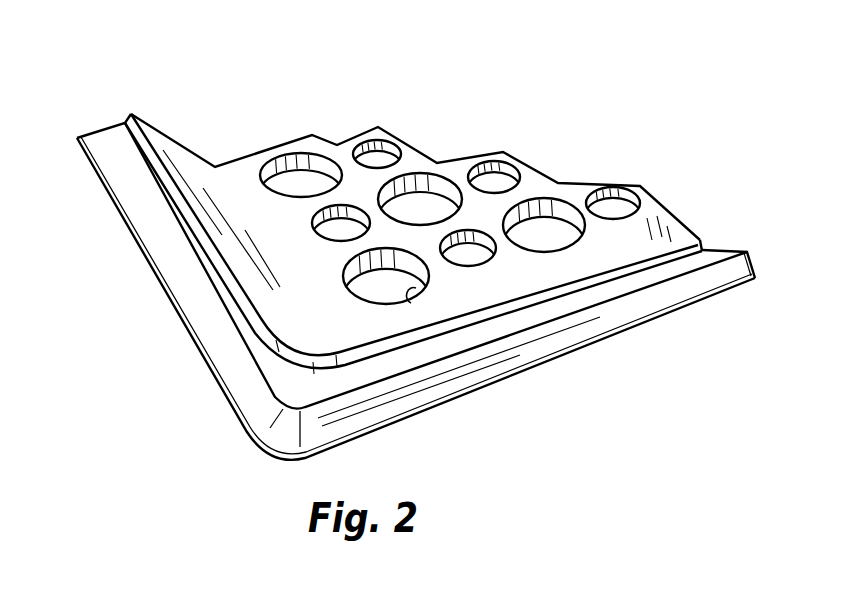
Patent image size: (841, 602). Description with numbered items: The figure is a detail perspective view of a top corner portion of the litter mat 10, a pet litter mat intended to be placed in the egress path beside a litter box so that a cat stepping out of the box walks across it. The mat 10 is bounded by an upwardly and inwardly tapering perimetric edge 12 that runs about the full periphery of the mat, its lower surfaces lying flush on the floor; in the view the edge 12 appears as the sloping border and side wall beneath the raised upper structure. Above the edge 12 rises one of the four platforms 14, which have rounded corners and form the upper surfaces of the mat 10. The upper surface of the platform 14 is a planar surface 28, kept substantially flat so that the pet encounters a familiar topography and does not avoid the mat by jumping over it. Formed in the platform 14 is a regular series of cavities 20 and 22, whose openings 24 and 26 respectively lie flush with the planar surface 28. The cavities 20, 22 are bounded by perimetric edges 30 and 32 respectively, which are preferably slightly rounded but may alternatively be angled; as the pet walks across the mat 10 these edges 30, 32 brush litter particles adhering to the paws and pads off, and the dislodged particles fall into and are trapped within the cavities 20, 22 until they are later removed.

The litter mat 10 is at (618, 98).
The perimetric edge 12 is at (611, 344).
The platform 14 is at (296, 320).
The cavity 20 is at (355, 282).
The cavity 22 is at (466, 254).
The opening 24 is at (415, 293).
The opening 26 is at (474, 240).
The planar surface 28 is at (238, 184).
The perimetric edge 30 is at (350, 260).
The perimetric edge 32 is at (494, 263).